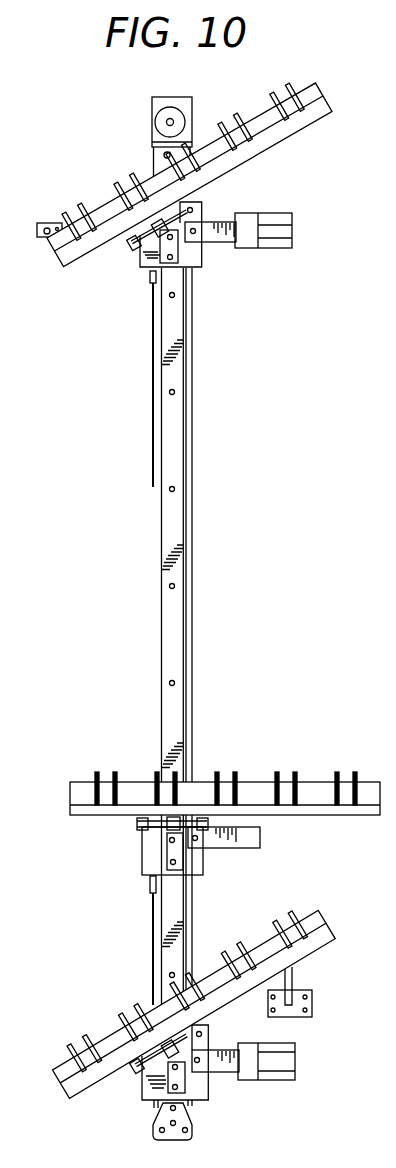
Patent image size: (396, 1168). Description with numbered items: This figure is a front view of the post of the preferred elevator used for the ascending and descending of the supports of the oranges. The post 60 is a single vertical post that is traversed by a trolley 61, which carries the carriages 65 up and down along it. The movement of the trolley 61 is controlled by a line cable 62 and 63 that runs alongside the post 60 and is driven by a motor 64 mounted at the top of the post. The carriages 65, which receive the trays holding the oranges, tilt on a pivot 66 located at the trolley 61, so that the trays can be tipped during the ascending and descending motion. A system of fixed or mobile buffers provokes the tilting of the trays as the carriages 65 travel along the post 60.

The column 60 is at (177, 533).
The trolley 61 is at (158, 848).
The line cable 62 is at (153, 431).
The line cable 63 is at (191, 438).
The motor 64 is at (157, 124).
The carriage 65 is at (248, 810).
The pivot 66 is at (176, 849).